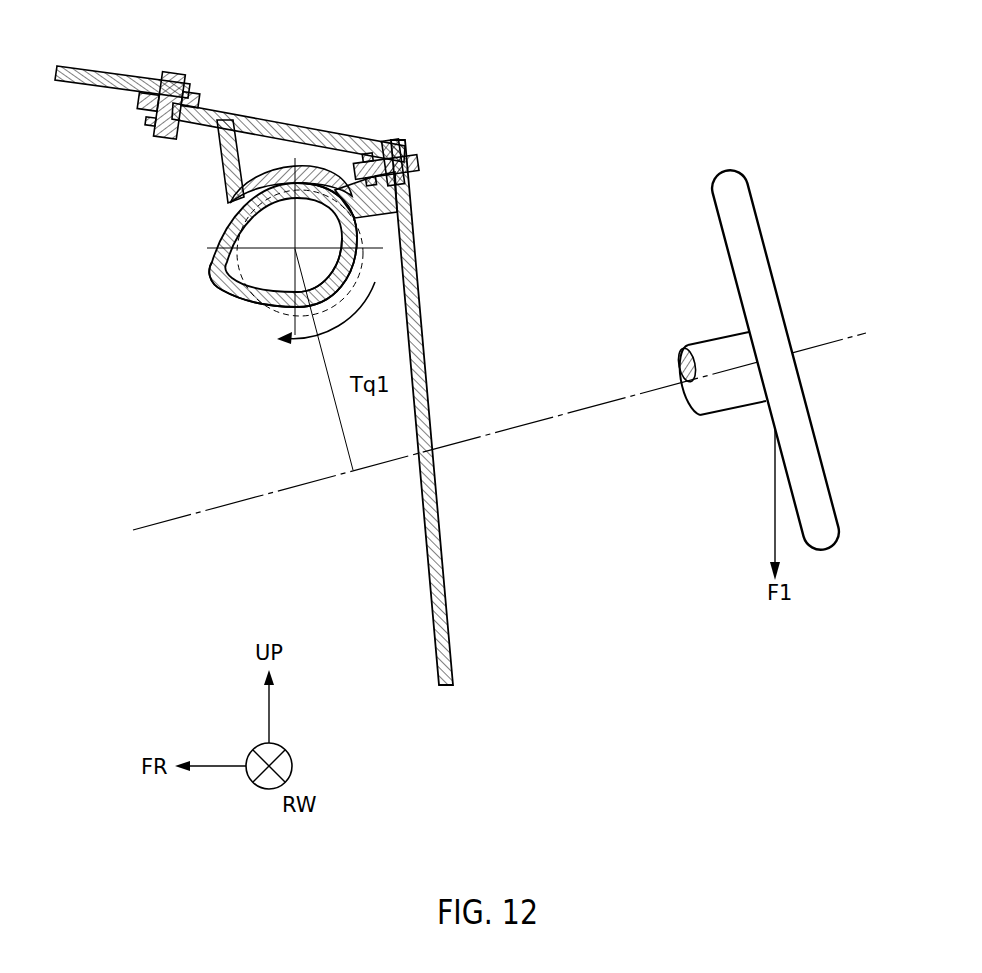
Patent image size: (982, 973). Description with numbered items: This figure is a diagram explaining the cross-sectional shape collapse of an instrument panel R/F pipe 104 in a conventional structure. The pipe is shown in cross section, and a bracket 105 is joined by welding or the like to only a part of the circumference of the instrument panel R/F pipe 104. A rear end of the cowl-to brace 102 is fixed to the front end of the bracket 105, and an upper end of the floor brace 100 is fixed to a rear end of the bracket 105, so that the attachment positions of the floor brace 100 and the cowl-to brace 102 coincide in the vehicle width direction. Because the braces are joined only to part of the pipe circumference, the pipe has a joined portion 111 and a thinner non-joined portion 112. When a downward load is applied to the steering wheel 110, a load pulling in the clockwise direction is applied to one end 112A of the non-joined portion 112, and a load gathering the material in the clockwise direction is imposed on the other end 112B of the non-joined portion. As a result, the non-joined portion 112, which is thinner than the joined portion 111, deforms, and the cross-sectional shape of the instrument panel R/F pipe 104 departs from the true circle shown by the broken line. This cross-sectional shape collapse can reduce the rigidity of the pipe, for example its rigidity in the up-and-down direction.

The floor brace 100 is at (422, 336).
The cowl-to brace 102 is at (112, 78).
The instrument panel R/F pipe 104 is at (313, 241).
The bracket 105 is at (265, 116).
The steering wheel 110 is at (738, 228).
The joined portion 111 is at (314, 187).
The non-joined portion 112 is at (247, 302).
The one end of the non-joined portion 112A is at (372, 233).
The other end of the non-joined portion 112B is at (194, 287).